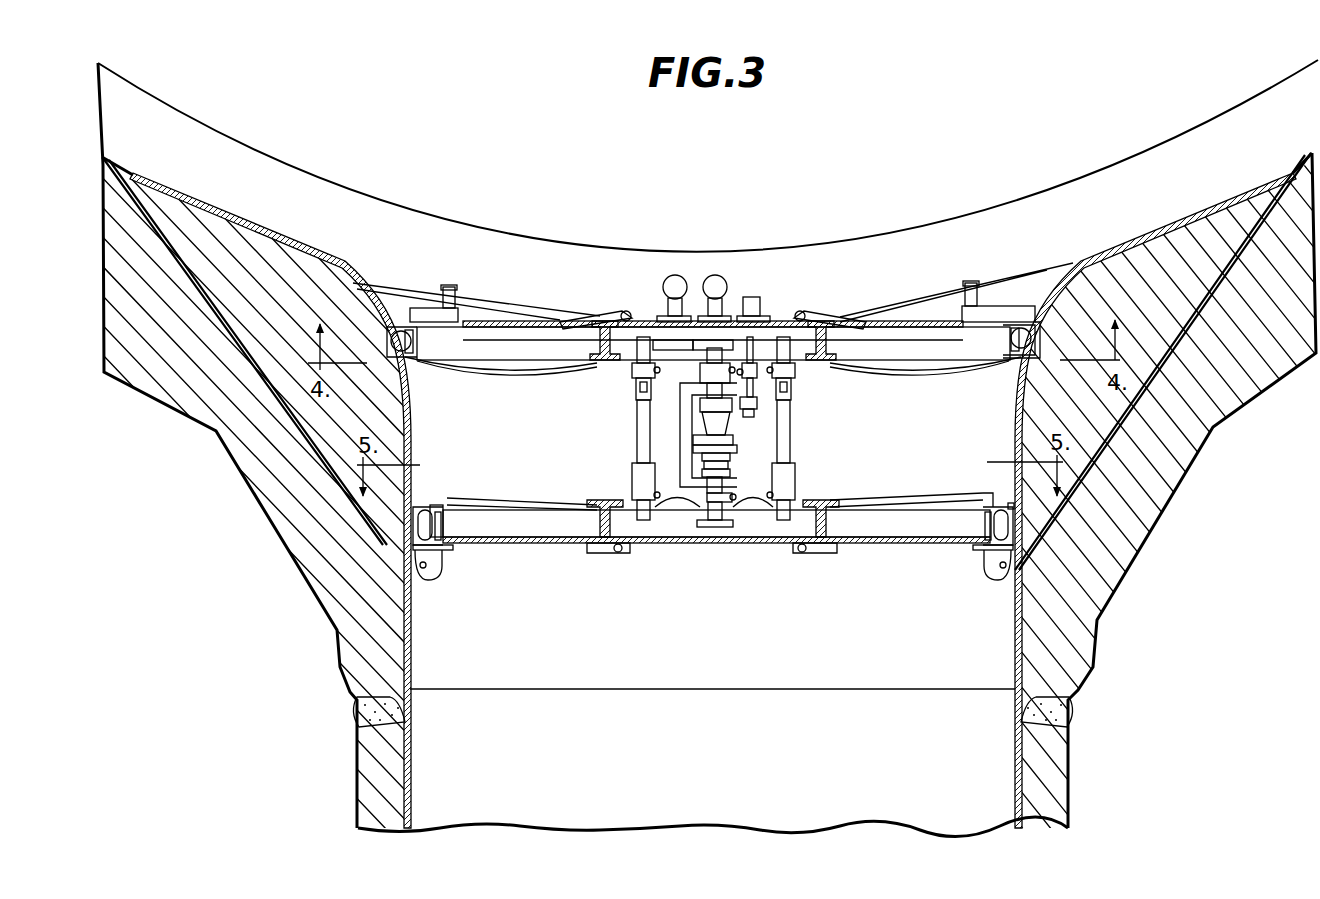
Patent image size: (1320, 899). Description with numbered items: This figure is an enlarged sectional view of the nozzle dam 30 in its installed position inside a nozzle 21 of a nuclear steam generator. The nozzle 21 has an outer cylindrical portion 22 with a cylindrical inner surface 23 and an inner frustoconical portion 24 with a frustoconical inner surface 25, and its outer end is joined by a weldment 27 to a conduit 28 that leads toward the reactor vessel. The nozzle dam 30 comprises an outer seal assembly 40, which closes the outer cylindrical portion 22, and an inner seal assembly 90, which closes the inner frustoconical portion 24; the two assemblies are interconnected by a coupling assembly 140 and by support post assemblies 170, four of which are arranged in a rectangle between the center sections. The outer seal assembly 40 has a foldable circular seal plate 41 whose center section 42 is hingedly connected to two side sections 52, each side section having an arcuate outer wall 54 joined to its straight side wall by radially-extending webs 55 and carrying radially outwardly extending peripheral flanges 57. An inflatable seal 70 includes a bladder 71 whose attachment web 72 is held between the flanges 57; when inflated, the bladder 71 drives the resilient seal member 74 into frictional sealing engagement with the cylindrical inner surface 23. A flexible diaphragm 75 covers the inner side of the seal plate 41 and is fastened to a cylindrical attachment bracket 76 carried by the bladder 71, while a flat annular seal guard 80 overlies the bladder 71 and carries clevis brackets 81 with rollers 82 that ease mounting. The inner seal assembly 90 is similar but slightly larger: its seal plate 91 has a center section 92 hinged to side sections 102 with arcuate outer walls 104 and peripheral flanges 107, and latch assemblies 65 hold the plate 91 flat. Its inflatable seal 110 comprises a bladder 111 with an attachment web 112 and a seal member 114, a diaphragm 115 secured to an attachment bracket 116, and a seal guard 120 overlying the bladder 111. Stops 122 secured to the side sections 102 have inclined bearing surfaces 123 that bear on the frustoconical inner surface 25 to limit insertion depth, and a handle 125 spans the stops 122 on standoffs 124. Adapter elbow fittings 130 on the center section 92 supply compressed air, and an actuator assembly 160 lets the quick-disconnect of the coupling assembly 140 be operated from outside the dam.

The nozzle 21 is at (226, 507).
The outer cylindrical portion 22 is at (1083, 651).
The cylindrical inner surface 23 is at (408, 667).
The inner frustoconical portion 24 is at (1250, 385).
The frustoconical inner surface 25 is at (1018, 402).
The weldment 27 is at (1070, 710).
The conduit 28 is at (1062, 797).
The nozzle dam 30 is at (784, 203).
The outer seal assembly 40 is at (713, 526).
The foldable circular seal plate 41 is at (760, 548).
The center section 42 is at (680, 543).
The side sections 52 is at (525, 545).
The arcuate outer wall 54 is at (985, 517).
The radially-extending webs 55 is at (878, 540).
The peripheral flanges 57 is at (440, 512).
The latch assemblies 65 is at (810, 306).
The inflatable seal 70 is at (988, 503).
The inflatable bladder 71 is at (1003, 507).
The attachment web 72 is at (968, 542).
The seal member 74 is at (1005, 503).
The flexible circular diaphragm 75 is at (935, 500).
The cylindrical attachment bracket 76 is at (415, 505).
The seal guard 80 is at (445, 547).
The clevis brackets 81 is at (440, 557).
The roller 82 is at (430, 580).
The inner seal assembly 90 is at (741, 404).
The foldable circular seal plate 91 is at (885, 320).
The center section 92 is at (640, 320).
The side sections 102 is at (513, 321).
The arcuate outer wall 104 is at (408, 340).
The peripheral flanges 107 is at (995, 358).
The inflatable seal 110 is at (410, 368).
The inflatable bladder 111 is at (400, 333).
The attachment web 112 is at (412, 338).
The seal member 114 is at (386, 335).
The flexible circular diaphragm 115 is at (536, 366).
The cylindrical attachment bracket 116 is at (1017, 352).
The seal guard 120 is at (1030, 313).
The stops 122 is at (998, 313).
The inclined bearing surface 123 is at (1042, 324).
The standoffs 124 is at (962, 300).
The handle 125 is at (972, 284).
The adapter elbow fittings 130 is at (712, 272).
The coupling assembly 140 is at (751, 440).
The actuator assembly 160 is at (767, 304).
The support post assemblies 170 is at (631, 443).